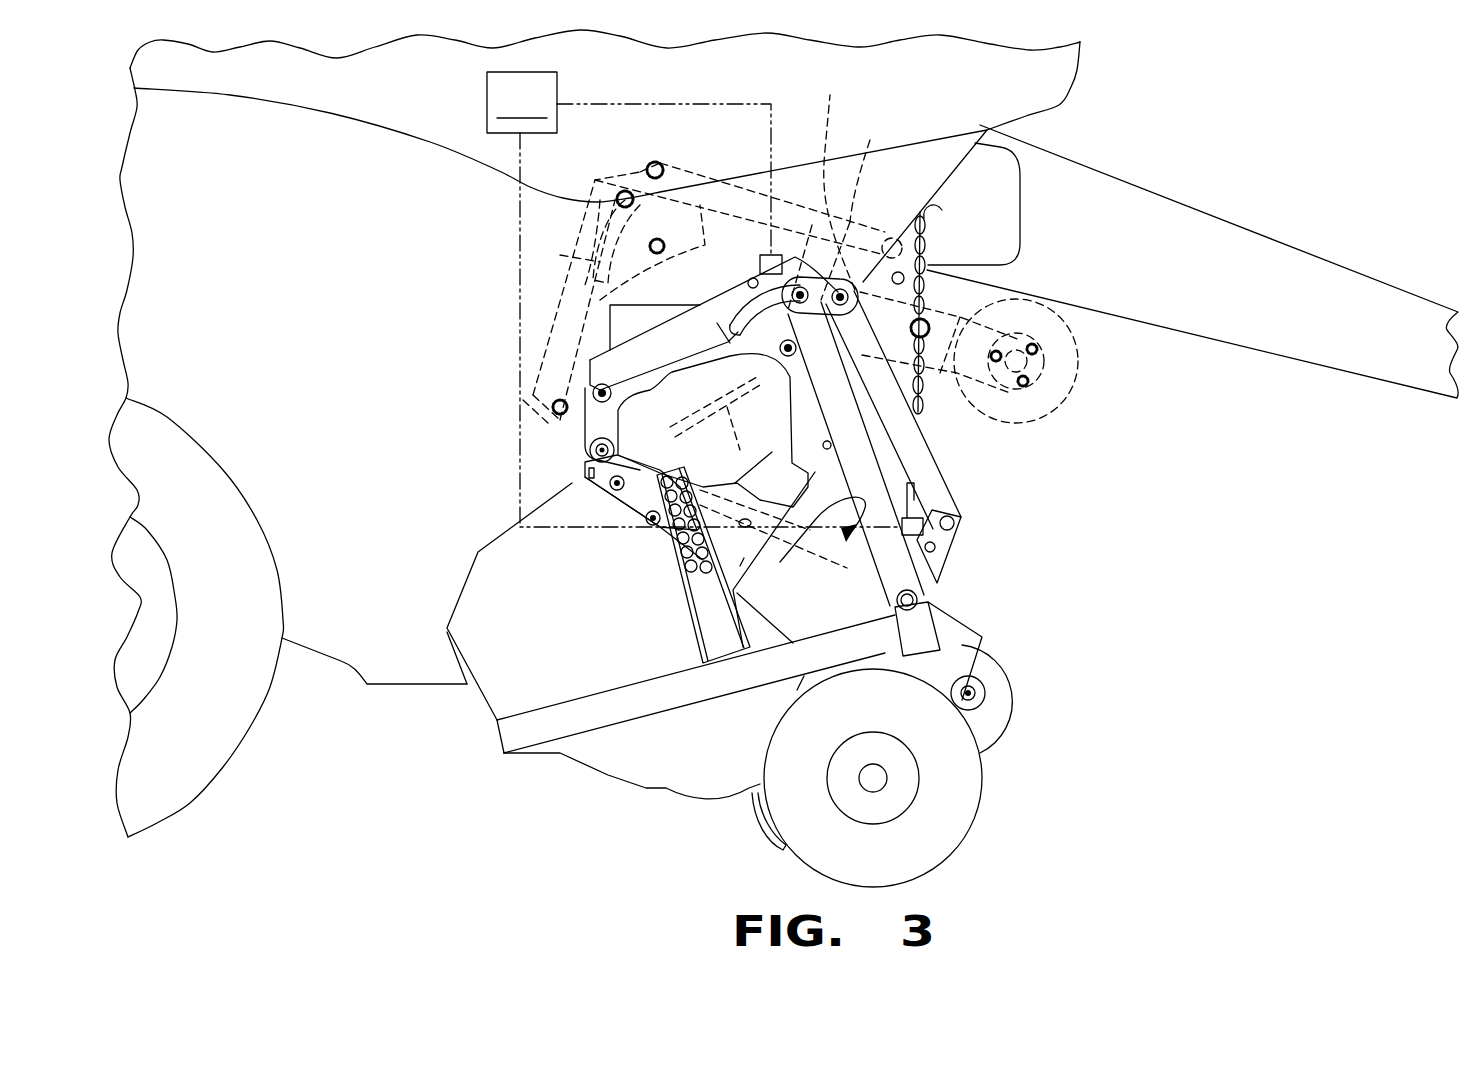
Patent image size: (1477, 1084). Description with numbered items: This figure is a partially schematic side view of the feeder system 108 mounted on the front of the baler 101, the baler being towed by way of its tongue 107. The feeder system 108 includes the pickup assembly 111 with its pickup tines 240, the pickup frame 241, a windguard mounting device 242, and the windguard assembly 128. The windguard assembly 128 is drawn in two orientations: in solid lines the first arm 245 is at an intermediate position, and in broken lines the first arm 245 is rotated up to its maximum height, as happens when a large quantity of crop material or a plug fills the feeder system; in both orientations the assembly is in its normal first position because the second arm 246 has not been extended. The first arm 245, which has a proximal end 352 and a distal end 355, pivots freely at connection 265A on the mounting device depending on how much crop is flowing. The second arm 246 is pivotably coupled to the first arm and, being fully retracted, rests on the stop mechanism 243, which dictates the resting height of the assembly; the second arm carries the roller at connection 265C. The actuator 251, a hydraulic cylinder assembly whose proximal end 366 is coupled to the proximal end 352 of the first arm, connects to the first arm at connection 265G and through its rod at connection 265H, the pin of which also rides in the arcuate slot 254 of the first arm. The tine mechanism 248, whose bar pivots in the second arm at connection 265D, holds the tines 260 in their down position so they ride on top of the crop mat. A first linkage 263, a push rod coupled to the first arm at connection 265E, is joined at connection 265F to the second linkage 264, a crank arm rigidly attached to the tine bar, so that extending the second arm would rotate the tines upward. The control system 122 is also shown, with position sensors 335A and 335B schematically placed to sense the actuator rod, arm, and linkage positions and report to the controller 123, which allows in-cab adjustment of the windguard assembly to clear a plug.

The baler 101 is at (1184, 103).
The tongue 107 is at (1243, 240).
The feeder system 108 is at (1078, 652).
The pickup assembly 111 is at (610, 775).
The control system 122 is at (468, 123).
The controller 123 is at (693, 299).
The windguard assembly 128 is at (1210, 440).
The pickup tines 240 is at (768, 845).
The pickup frame 241 is at (525, 667).
The windguard mounting device 242 is at (632, 500).
The stop mechanism 243 is at (678, 565).
The first arm 245 is at (562, 245).
The second arm 246 is at (835, 195).
The tine mechanism 248 is at (821, 366).
The actuator 251 is at (590, 270).
The arcuate slot 254 is at (753, 327).
The tines 260 is at (742, 443).
The first linkage 263 is at (800, 120).
The second linkage 264 is at (929, 275).
The connection 265A is at (588, 460).
The connection 265C is at (975, 700).
The connection 265D is at (920, 590).
The connection 265E is at (928, 262).
The connection 265F is at (958, 523).
The connection 265G is at (590, 395).
The connection 265H is at (845, 285).
The position sensor 335A is at (760, 262).
The position sensor 335B is at (930, 510).
The proximal end 352 is at (575, 452).
The distal end 355 is at (803, 268).
The proximal end 366 is at (600, 370).